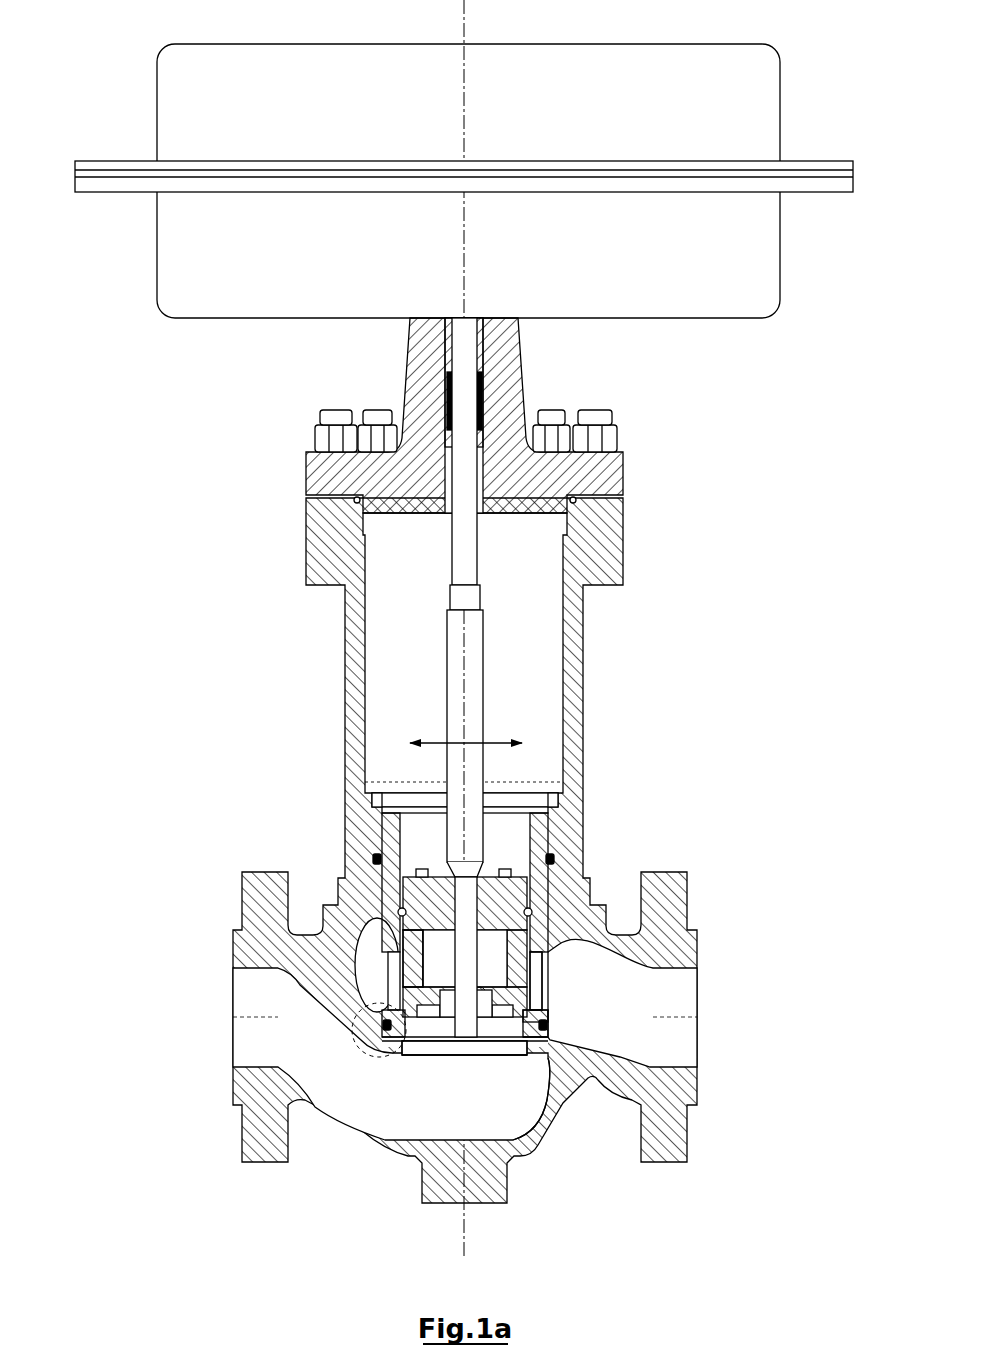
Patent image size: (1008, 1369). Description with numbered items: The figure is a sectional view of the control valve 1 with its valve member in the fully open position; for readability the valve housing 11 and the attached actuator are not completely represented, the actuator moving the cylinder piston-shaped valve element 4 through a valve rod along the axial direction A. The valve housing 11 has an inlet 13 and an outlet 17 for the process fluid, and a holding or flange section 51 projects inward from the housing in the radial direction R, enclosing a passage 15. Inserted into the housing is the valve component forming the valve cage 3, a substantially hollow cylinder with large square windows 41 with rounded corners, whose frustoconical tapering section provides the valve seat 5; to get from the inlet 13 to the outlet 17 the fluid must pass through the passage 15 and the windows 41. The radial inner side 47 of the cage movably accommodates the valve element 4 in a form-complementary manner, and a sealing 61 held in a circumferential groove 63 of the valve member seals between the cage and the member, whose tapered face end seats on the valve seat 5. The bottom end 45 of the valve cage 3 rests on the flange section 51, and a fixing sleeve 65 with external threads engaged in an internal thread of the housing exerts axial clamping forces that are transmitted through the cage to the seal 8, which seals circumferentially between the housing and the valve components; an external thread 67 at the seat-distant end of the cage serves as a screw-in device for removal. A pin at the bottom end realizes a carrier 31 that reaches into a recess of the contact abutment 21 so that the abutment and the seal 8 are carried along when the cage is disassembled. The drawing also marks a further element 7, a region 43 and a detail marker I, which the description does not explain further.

The control valve 1 is at (176, 792).
The valve cage 3 is at (410, 880).
The valve element 4 is at (441, 842).
The valve seat 5 is at (533, 970).
The seat seal 7 is at (553, 1031).
The seal 8 is at (556, 1024).
The valve housing 11 is at (541, 893).
The inlet 13 is at (241, 1057).
The passage 15 is at (436, 1040).
The outlet 17 is at (660, 1004).
The contact abutment 21 is at (552, 1060).
The carrier 31 is at (537, 1060).
The windows 41 is at (390, 972).
The cage window 43 is at (536, 920).
The bottom end 45 is at (528, 1048).
The radial inner side 47 is at (412, 942).
The flange section 51 is at (542, 1062).
The sealing 61 is at (375, 855).
The circumferential groove 63 is at (552, 930).
The fixing sleeve 65 is at (550, 815).
The external thread 67 is at (372, 793).
The axial direction A is at (470, 688).
The radial direction R is at (437, 740).
The detail region I is at (365, 1047).